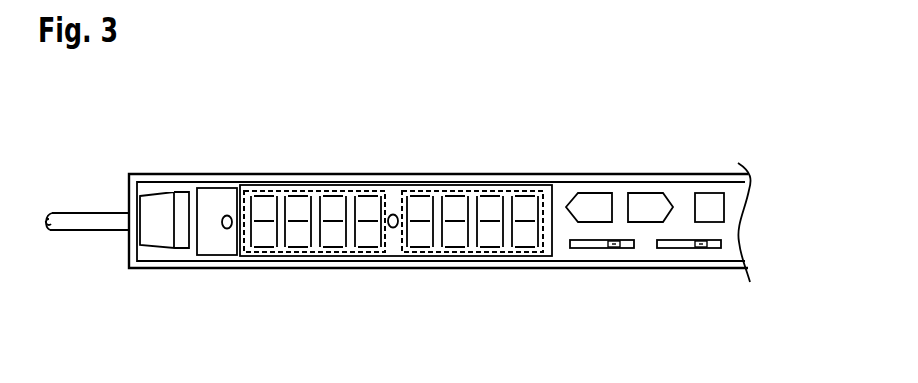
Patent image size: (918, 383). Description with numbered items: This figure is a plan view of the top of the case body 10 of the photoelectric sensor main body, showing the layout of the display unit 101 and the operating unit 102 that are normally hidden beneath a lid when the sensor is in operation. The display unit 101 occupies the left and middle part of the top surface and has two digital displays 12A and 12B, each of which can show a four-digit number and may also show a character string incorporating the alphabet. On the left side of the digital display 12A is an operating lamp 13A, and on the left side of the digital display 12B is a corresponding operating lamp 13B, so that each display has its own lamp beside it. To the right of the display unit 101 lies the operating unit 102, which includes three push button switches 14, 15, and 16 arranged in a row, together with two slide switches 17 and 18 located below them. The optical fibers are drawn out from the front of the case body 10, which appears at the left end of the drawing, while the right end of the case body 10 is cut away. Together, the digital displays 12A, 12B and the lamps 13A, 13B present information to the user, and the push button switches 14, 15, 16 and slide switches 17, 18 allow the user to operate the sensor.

The case body 10 is at (187, 174).
The digital display 12A is at (318, 178).
The digital display 12B is at (472, 178).
The operating lamp 13A is at (227, 229).
The operating lamp 13B is at (393, 228).
The push button switch 14 is at (648, 197).
The push button switch 15 is at (593, 197).
The push button switch 16 is at (710, 197).
The slide switch 17 is at (612, 248).
The slide switch 18 is at (700, 248).
The display unit 101 is at (394, 186).
The operating unit 102 is at (674, 178).